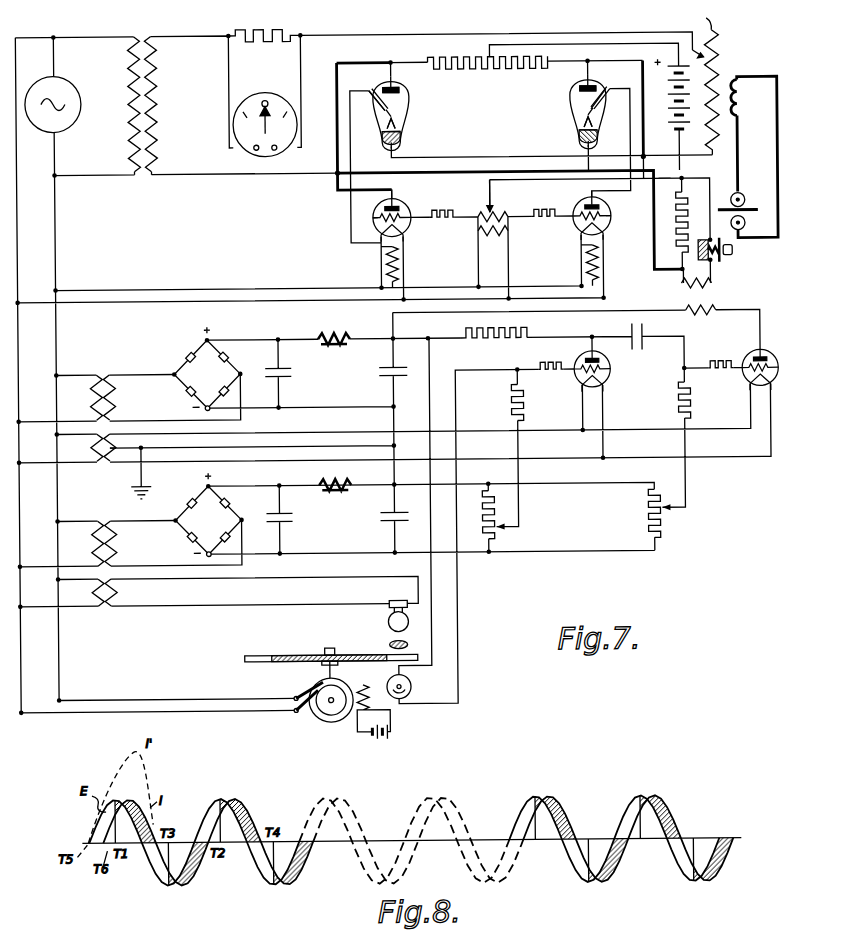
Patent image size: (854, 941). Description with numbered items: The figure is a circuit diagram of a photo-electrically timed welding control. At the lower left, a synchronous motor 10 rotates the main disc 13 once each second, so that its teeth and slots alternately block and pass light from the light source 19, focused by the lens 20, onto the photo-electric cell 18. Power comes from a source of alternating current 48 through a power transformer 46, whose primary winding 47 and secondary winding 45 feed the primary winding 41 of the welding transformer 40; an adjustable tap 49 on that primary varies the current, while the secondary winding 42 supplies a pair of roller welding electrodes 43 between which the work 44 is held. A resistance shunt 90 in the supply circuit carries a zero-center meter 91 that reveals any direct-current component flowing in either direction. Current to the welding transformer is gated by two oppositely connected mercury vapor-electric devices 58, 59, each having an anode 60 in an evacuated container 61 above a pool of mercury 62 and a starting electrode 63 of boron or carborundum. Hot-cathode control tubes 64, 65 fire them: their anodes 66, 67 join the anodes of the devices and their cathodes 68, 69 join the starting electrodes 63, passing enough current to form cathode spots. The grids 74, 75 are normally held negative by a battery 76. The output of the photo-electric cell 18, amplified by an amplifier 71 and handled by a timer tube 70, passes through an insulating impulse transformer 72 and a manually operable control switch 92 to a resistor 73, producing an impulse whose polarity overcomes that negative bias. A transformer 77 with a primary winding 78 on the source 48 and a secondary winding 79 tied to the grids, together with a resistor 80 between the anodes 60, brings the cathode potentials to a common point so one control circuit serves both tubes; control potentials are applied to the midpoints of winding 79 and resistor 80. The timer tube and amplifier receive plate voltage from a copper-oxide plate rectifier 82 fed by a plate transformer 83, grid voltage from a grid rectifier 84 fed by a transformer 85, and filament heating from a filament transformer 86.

The synchronous motor 10 is at (294, 697).
The main disc 13 is at (348, 657).
The photo-electric cell 18 is at (407, 691).
The light source 19 is at (385, 628).
The lens 20 is at (400, 646).
The welding transformer 40 is at (746, 49).
The primary winding 41 is at (700, 15).
The secondary winding 42 is at (734, 93).
The roller welding electrodes 43 is at (742, 202).
The work 44 is at (750, 216).
The secondary winding 45 is at (158, 141).
The power transformer 46 is at (141, 91).
The primary winding 47 is at (127, 118).
The source of alternating current 48 is at (73, 91).
The adjustable tap 49 is at (690, 53).
The vapor-electric device 58 is at (442, 109).
The vapor-electric device 59 is at (562, 105).
The anode 60 is at (392, 89).
The container 61 is at (405, 125).
The pool of mercury 62 is at (402, 142).
The starting electrode 63 is at (487, 100).
The control tube 64 is at (437, 215).
The control tube 65 is at (633, 211).
The anode 66 is at (405, 189).
The anode 67 is at (586, 203).
The cathode 68 is at (402, 238).
The cathode 69 is at (578, 232).
The timer tube 70 is at (788, 343).
The amplifier 71 is at (641, 392).
The impulse transformer 72 is at (678, 311).
The resistor 73 is at (695, 229).
The grid 74 is at (373, 230).
The grid 75 is at (603, 226).
The battery 76 is at (673, 113).
The transformer 77 is at (466, 253).
The primary winding 78 is at (511, 230).
The secondary winding 79 is at (491, 211).
The resistor 80 is at (478, 60).
The plate rectifier 82 is at (184, 359).
The plate transformer 83 is at (114, 378).
The grid rectifier 84 is at (186, 506).
The transformer 85 is at (116, 522).
The filament transformer 86 is at (116, 436).
The resistance shunt 90 is at (274, 33).
The meter 91 is at (277, 152).
The control switch 92 is at (729, 262).